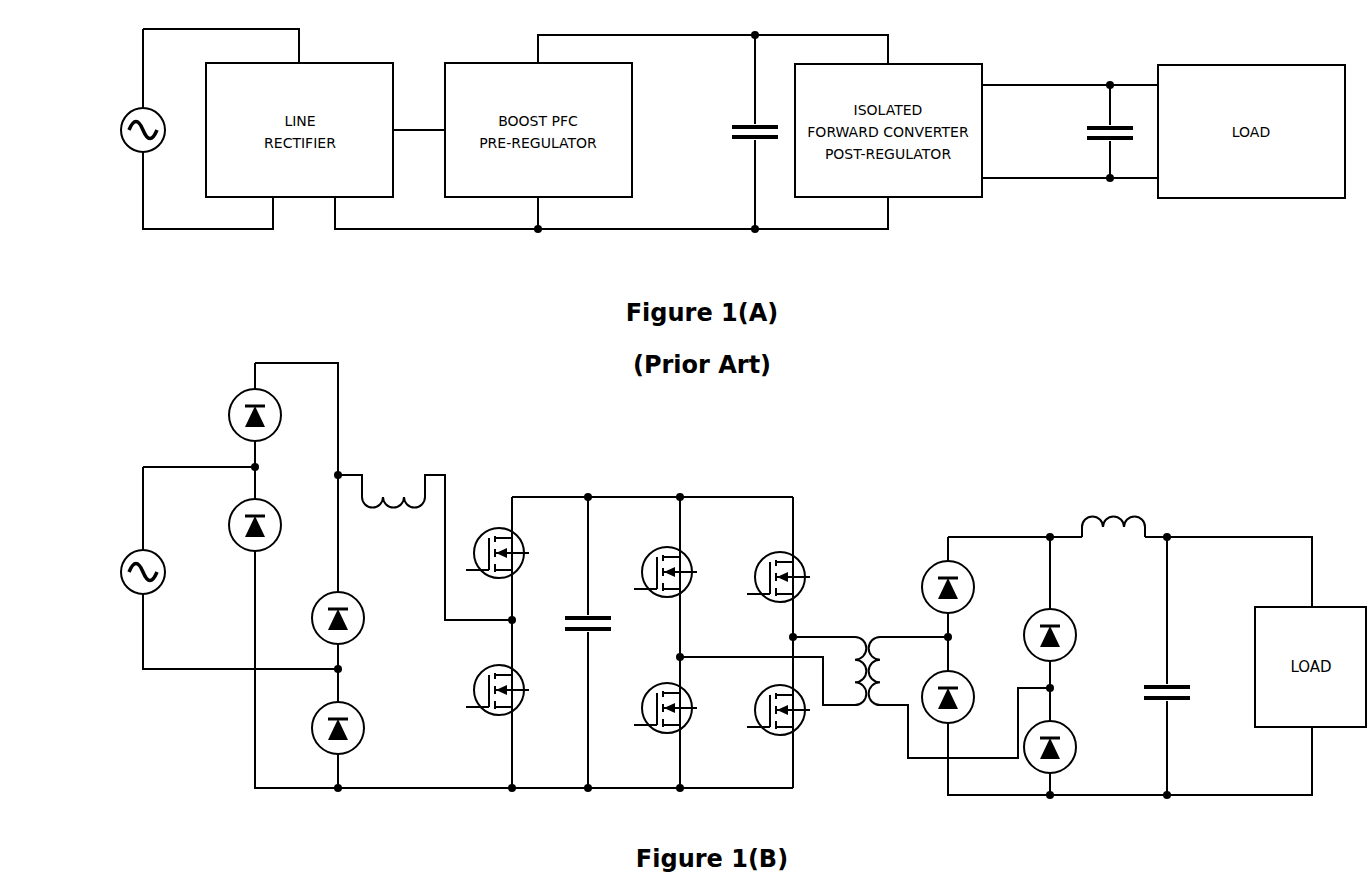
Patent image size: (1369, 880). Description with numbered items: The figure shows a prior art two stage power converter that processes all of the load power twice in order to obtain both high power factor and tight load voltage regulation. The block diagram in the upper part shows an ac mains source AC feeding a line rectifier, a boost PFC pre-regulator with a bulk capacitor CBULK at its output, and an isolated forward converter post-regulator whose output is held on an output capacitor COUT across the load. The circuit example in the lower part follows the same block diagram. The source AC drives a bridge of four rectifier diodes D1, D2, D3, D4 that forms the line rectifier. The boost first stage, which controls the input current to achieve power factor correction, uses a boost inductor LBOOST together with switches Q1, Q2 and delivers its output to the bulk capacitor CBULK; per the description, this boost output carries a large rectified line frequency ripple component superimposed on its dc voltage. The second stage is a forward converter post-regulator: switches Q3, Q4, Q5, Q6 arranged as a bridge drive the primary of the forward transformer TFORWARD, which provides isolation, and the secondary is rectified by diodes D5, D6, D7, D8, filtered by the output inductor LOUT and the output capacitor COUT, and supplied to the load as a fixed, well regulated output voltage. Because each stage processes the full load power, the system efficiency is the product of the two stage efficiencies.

In FIG. 1A, the AC source AC is at (131, 130).
In FIG. 1B, the AC source AC is at (131, 572).
In FIG. 1A, the bulk capacitor CBULK is at (729, 132).
In FIG. 1B, the bulk capacitor CBULK is at (573, 642).
In FIG. 1A, the output capacitor COUT is at (1085, 131).
In FIG. 1B, the output capacitor COUT is at (1188, 666).
In FIG. 1B, the rectifier diode D1 is at (269, 415).
In FIG. 1B, the rectifier diode D2 is at (269, 525).
In FIG. 1B, the rectifier diode D3 is at (352, 618).
In FIG. 1B, the rectifier diode D4 is at (352, 728).
In FIG. 1B, the secondary rectifier diode D5 is at (962, 587).
In FIG. 1B, the secondary rectifier diode D6 is at (962, 697).
In FIG. 1B, the secondary rectifier diode D7 is at (1064, 635).
In FIG. 1B, the secondary rectifier diode D8 is at (1064, 747).
In FIG. 1B, the boost switch transistor Q1 is at (497, 558).
In FIG. 1B, the boost switch transistor Q2 is at (497, 676).
In FIG. 1B, the bridge switch transistor Q3 is at (665, 558).
In FIG. 1B, the bridge switch transistor Q4 is at (665, 694).
In FIG. 1B, the bridge switch transistor Q5 is at (778, 563).
In FIG. 1B, the bridge switch transistor Q6 is at (778, 697).
In FIG. 1B, the boost inductor LBOOST is at (423, 536).
In FIG. 1B, the output inductor LOUT is at (1113, 514).
In FIG. 1B, the forward transformer TFORWARD is at (865, 686).